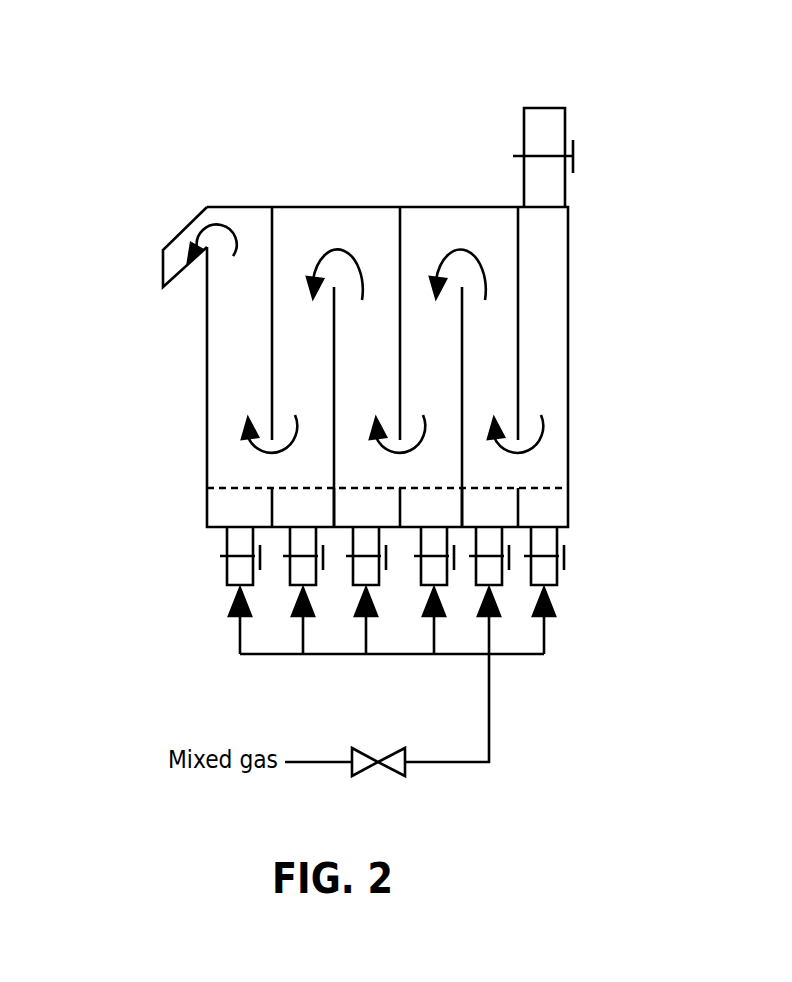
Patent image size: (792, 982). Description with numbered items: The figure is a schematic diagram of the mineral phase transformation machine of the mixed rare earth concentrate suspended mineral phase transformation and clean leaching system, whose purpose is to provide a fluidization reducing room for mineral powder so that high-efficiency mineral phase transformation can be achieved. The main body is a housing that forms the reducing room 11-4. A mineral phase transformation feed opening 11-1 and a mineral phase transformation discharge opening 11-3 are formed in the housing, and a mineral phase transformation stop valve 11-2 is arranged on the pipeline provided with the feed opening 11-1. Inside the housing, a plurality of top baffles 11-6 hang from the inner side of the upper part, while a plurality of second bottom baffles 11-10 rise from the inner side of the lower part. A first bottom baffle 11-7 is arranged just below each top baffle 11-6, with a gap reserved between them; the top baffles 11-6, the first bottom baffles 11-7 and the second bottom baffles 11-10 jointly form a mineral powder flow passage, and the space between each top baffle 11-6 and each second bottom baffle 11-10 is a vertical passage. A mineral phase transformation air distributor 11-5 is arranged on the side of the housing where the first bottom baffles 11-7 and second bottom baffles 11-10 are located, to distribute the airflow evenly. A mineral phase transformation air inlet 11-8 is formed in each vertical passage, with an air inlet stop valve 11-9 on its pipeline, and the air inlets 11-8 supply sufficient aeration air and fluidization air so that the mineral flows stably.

The mineral phase transformation feed opening 11-1 is at (480, 108).
The mineral phase transformation stop valve 11-2 is at (588, 155).
The mineral phase transformation discharge opening 11-3 is at (162, 228).
The reducing room 11-4 is at (572, 327).
The mineral phase transformation air distributor 11-5 is at (490, 483).
The top baffle 11-6 is at (262, 386).
The first bottom baffle 11-7 is at (268, 498).
The mineral phase transformation air inlet 11-8 is at (222, 570).
The air inlet stop valve 11-9 is at (573, 562).
The second bottom baffle 11-10 is at (328, 343).